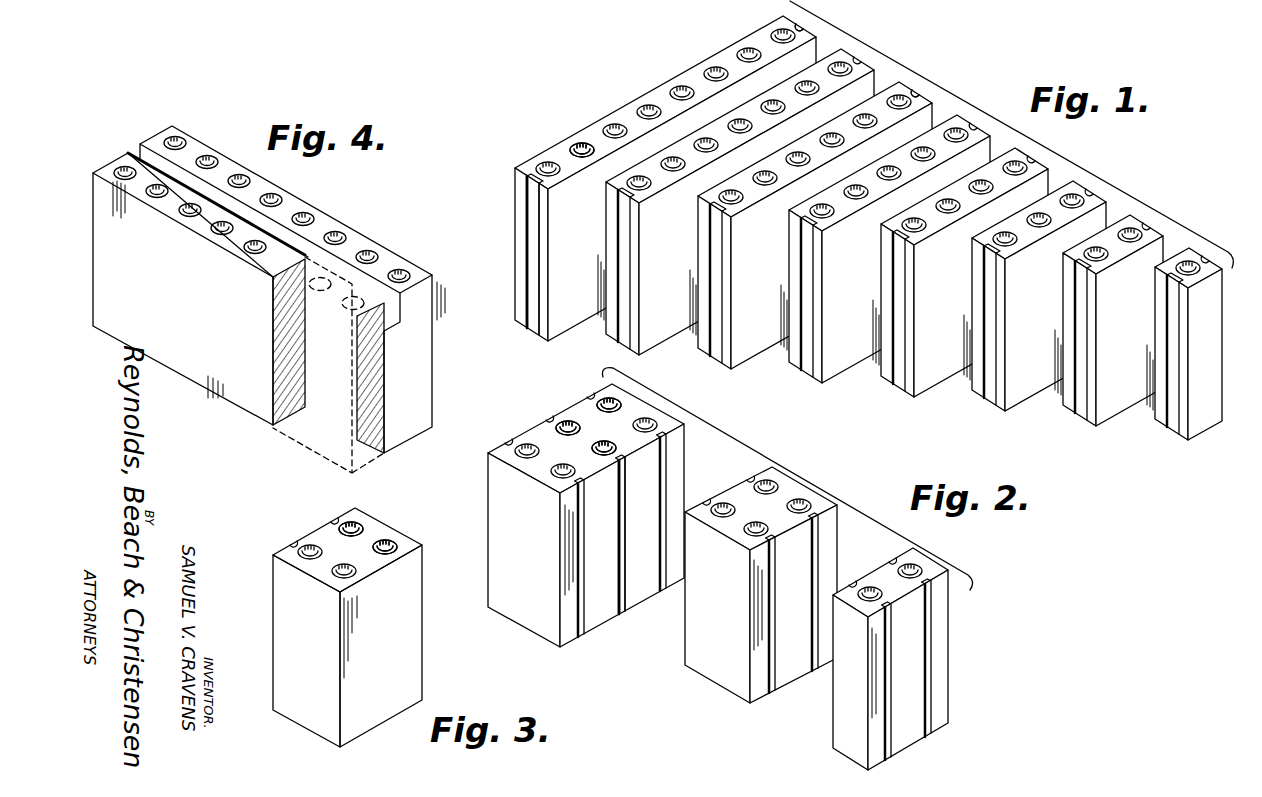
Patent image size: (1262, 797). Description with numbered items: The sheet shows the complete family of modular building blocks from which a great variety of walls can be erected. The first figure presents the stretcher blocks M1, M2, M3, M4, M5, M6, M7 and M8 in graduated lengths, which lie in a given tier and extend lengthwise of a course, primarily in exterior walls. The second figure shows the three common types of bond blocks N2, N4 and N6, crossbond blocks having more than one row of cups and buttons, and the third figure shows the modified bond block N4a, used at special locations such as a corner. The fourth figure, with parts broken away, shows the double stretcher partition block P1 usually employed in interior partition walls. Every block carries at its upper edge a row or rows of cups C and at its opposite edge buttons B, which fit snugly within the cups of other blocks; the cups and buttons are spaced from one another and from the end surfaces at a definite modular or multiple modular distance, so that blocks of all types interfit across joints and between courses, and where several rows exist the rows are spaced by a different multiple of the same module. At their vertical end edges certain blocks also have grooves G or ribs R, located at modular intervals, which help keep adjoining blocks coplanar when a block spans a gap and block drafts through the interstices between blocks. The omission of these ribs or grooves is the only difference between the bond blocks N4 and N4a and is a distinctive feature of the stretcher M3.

In FIG. 1, the stretcher block M1 is at (1186, 437).
In FIG. 1, the stretcher block M2 is at (1094, 422).
In FIG. 1, the stretcher block M3 is at (1002, 407).
In FIG. 1, the stretcher block M4 is at (910, 395).
In FIG. 1, the stretcher block M5 is at (819, 381).
In FIG. 1, the stretcher block M6 is at (728, 367).
In FIG. 1, the stretcher block M7 is at (637, 348).
In FIG. 1, the stretcher block M8 is at (546, 330).
In FIG. 2, the bond block N2 is at (843, 718).
In FIG. 2, the bond block N4 is at (700, 642).
In FIG. 3, the bond block N4a is at (407, 658).
In FIG. 2, the bond block N6 is at (500, 560).
In FIG. 4, the cup C is at (207, 160).
In FIG. 1, the cup C is at (581, 144).
In FIG. 2, the cup C is at (600, 450).
In FIG. 3, the cup C is at (389, 540).
In FIG. 1, the groove G is at (529, 250).
In FIG. 1, the rib R is at (799, 25).
In FIG. 2, the rib R is at (622, 614).
In FIG. 3, the rib R is at (337, 517).
In FIG. 4, the partition block P1 is at (302, 198).
In FIG. 4, the button B is at (292, 432).